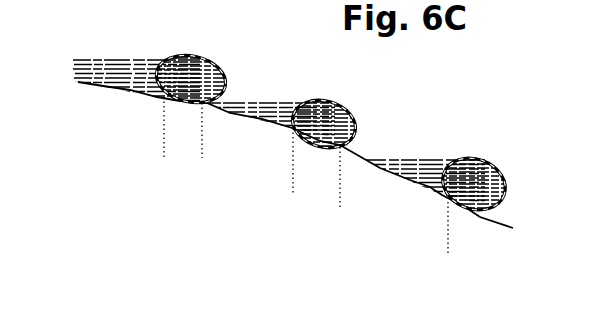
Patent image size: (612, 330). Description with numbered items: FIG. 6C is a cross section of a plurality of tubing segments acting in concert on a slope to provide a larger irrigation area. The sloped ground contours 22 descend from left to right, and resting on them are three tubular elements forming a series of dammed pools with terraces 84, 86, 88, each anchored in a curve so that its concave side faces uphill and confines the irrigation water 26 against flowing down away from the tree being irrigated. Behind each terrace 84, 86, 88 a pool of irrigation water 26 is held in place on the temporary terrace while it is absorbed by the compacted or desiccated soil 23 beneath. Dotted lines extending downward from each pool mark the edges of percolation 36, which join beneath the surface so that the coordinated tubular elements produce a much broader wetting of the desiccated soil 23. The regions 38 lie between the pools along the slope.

The ground contours or variations 22 is at (80, 81).
The irrigation water 26 is at (120, 63).
The terrace 84 is at (207, 67).
The terrace 86 is at (337, 117).
The terrace 88 is at (468, 170).
The uncoated region 38 is at (135, 144).
The desiccated soil 23 is at (203, 144).
The edges of percolation 36 is at (202, 158).